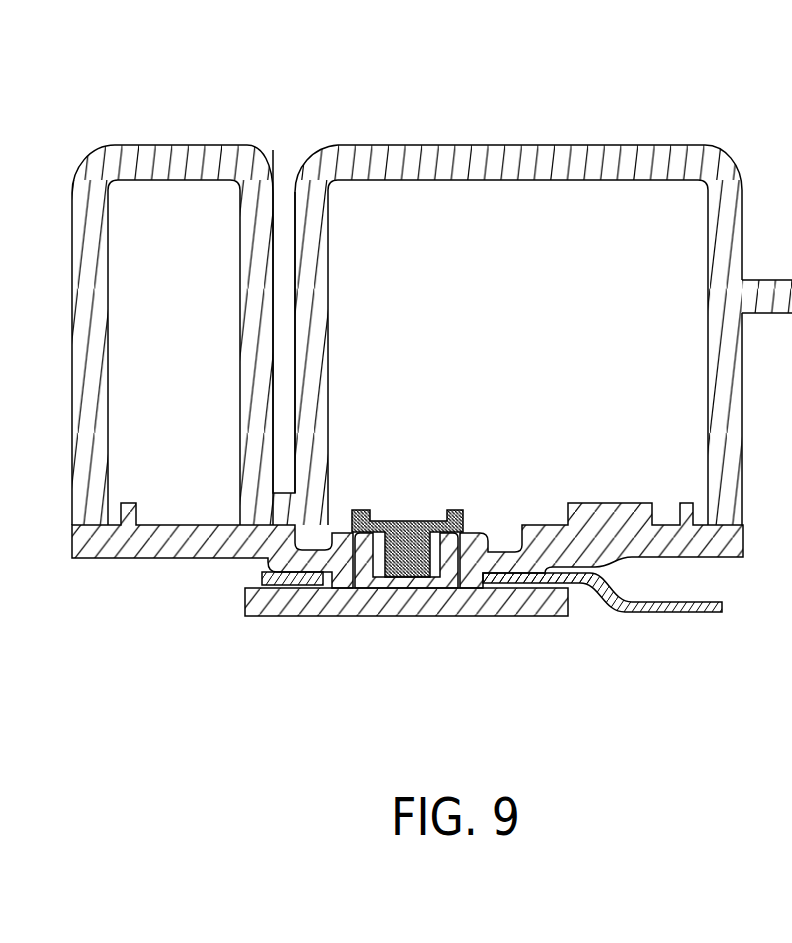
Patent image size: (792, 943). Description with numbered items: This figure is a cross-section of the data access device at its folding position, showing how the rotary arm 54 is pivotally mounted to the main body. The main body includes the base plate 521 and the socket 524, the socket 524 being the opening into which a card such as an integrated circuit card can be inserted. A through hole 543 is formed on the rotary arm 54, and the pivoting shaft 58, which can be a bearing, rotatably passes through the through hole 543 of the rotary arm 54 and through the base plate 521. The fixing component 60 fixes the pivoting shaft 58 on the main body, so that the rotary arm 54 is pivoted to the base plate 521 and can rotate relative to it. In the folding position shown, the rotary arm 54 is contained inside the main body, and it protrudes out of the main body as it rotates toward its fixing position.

The socket 524 is at (282, 220).
The base plate 521 is at (541, 541).
The fixing component 60 is at (408, 560).
The pivoting shaft 58 is at (290, 600).
The rotary arm 54 is at (677, 608).
The through hole 543 is at (484, 578).